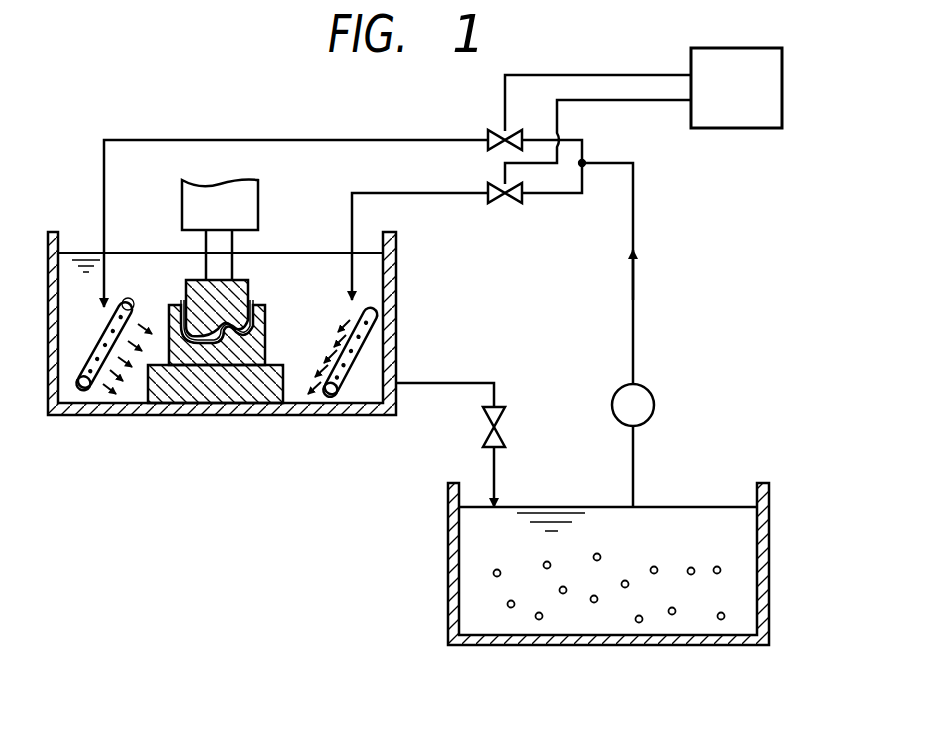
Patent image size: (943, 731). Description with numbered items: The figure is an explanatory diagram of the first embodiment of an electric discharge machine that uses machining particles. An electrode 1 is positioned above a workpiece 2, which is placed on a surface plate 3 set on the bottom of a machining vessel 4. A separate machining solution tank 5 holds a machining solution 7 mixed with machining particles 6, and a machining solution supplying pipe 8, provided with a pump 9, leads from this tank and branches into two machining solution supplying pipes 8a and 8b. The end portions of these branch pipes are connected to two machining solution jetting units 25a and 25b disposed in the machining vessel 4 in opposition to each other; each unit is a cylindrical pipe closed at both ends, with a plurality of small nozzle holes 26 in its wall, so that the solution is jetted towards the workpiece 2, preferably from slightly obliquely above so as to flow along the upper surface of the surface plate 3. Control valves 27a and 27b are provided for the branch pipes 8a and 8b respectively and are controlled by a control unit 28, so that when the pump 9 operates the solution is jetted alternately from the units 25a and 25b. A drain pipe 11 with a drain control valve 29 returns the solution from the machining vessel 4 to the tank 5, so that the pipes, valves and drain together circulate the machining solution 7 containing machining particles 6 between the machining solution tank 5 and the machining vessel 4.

The electrode 1 is at (197, 287).
The workpiece 2 is at (258, 392).
The surface plate 3 is at (208, 392).
The machining vessel 4 is at (142, 416).
The machining solution tank 5 is at (448, 622).
The machining particles 6 is at (540, 620).
The machining solution 7 is at (690, 520).
The machining solution supplying pipe 8 is at (632, 288).
The machining solution supplying pipe 8a is at (414, 192).
The machining solution supplying pipe 8b is at (381, 138).
The pump 9 is at (655, 406).
The drain pipe 11 is at (465, 382).
The machining solution jetting unit 25a is at (345, 400).
The machining solution jetting unit 25b is at (83, 400).
The nozzle holes 26 is at (122, 310).
The control valve 27a is at (490, 202).
The control valve 27b is at (493, 130).
The control unit 28 is at (769, 128).
The drain control valve 29 is at (506, 428).